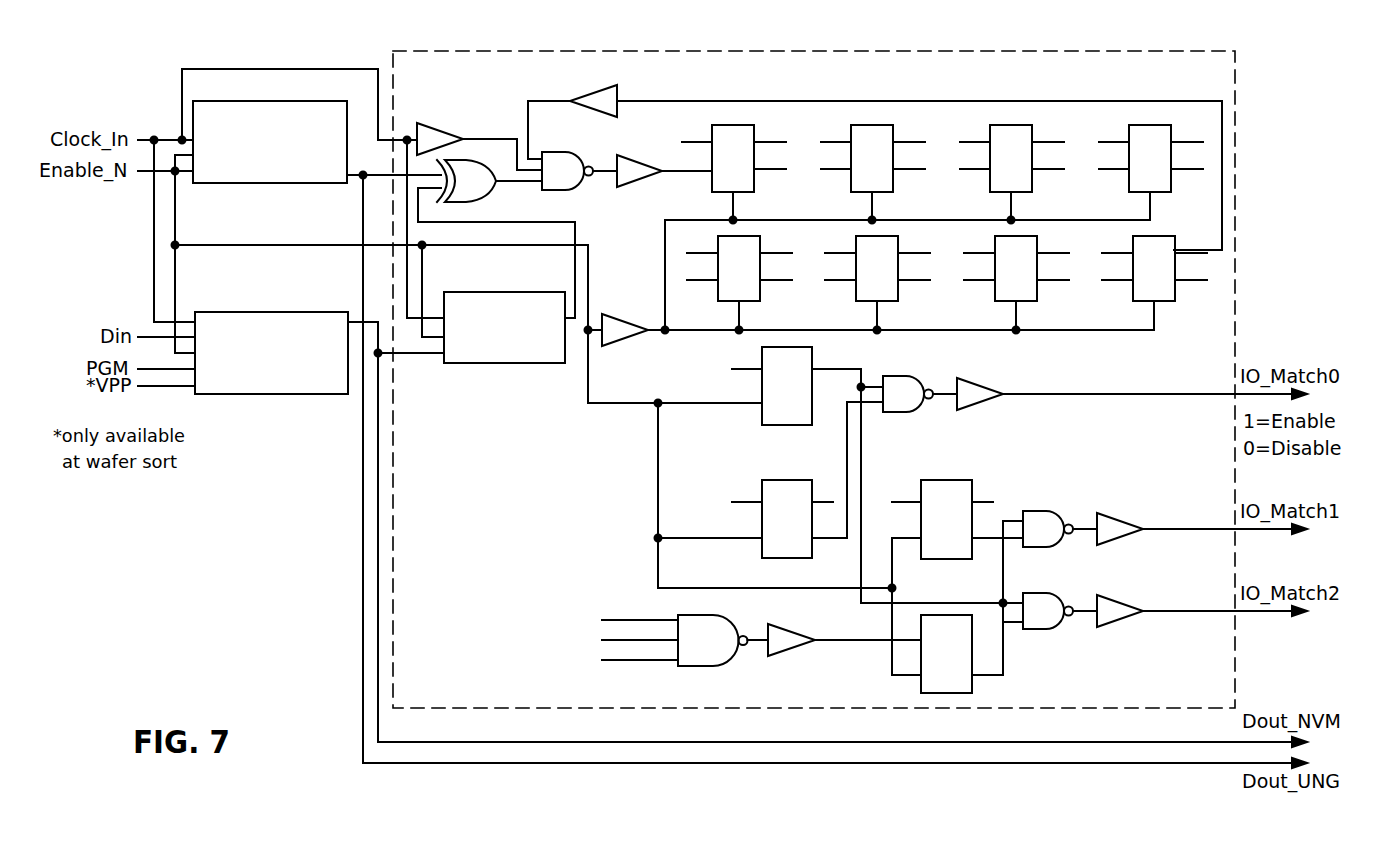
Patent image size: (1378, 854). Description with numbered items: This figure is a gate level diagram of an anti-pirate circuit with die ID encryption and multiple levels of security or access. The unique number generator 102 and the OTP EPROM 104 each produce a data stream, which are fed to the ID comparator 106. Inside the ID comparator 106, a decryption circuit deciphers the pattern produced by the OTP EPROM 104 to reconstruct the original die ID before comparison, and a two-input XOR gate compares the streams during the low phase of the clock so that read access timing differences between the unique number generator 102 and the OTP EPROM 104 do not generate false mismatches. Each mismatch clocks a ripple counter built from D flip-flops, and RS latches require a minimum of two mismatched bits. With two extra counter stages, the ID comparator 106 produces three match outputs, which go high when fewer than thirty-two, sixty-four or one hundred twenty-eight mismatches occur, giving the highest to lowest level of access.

The unique number generator 102 is at (323, 184).
The OTP EPROM 104 is at (321, 395).
The ID comparator 106 is at (1113, 62).